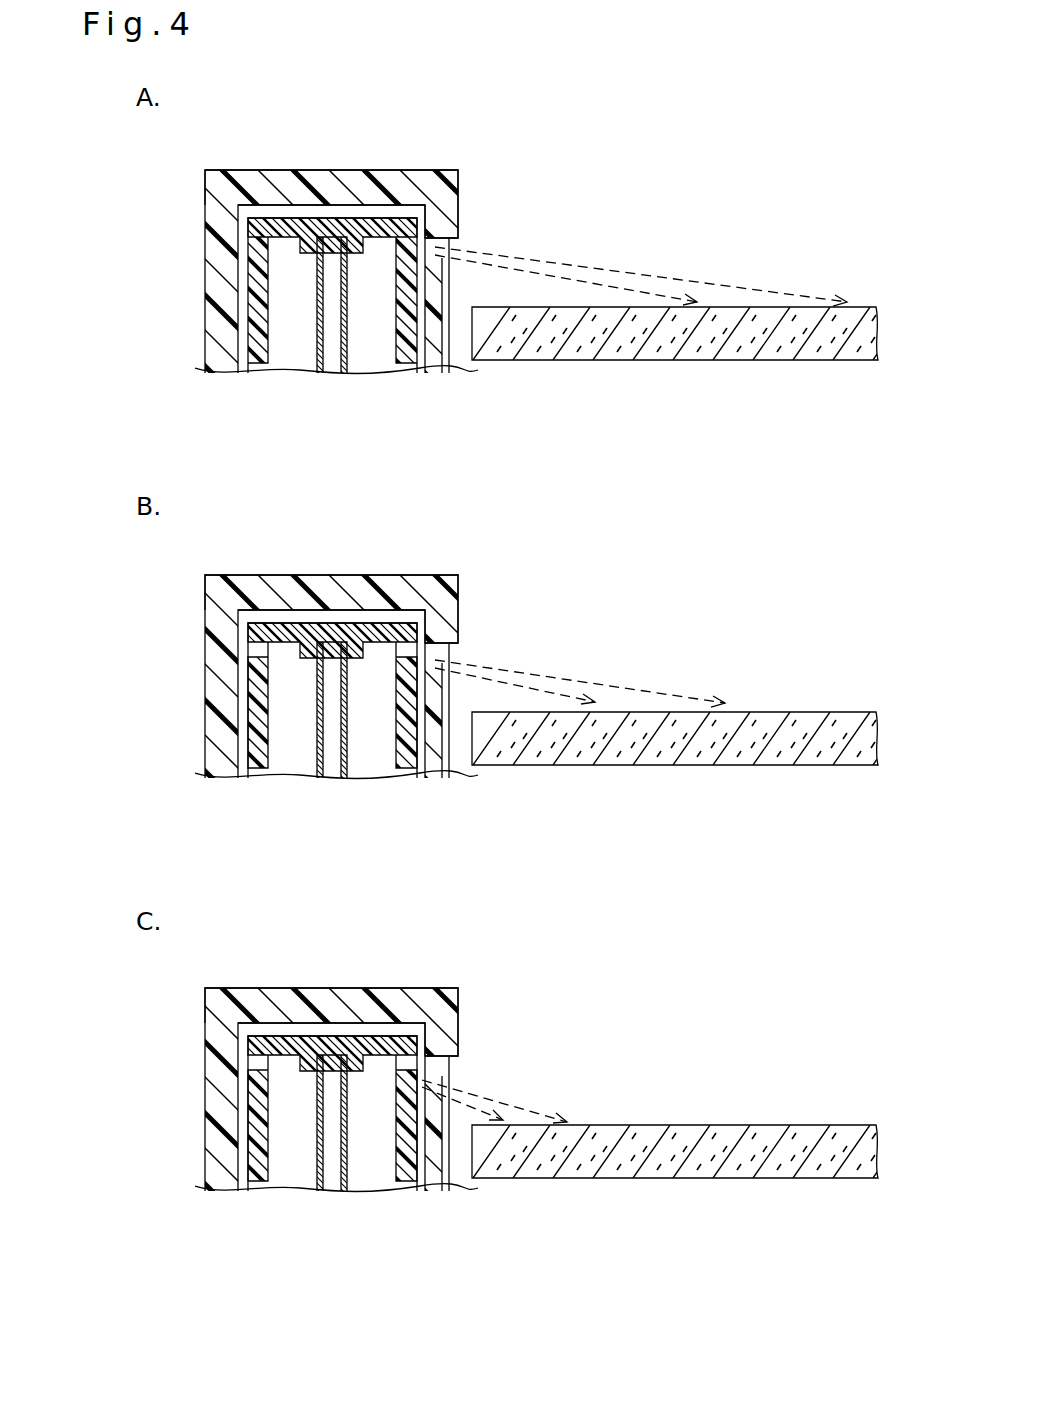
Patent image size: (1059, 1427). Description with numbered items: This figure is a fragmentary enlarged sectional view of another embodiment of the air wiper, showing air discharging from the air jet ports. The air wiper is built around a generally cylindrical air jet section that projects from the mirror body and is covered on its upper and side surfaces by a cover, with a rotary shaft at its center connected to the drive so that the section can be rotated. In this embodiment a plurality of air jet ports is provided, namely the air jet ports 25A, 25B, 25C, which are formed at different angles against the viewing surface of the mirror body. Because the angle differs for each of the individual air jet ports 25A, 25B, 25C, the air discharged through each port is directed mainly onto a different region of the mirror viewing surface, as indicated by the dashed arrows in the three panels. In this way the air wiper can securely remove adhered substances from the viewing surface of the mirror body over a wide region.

The air jet port 25A is at (407, 240).
The air jet port 25B is at (362, 596).
The air jet port 25C is at (362, 1011).